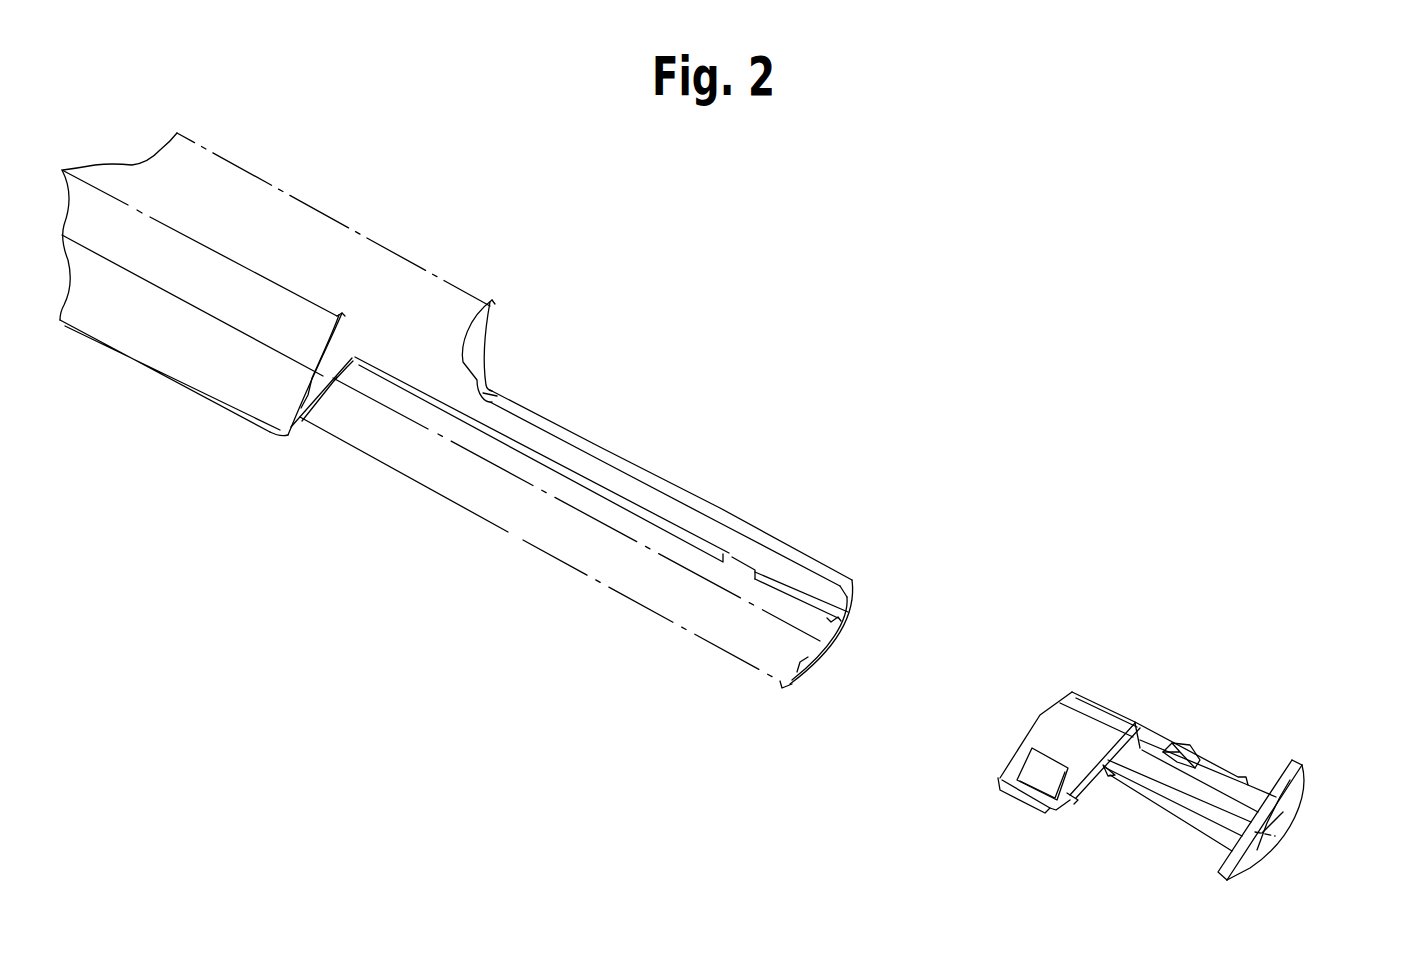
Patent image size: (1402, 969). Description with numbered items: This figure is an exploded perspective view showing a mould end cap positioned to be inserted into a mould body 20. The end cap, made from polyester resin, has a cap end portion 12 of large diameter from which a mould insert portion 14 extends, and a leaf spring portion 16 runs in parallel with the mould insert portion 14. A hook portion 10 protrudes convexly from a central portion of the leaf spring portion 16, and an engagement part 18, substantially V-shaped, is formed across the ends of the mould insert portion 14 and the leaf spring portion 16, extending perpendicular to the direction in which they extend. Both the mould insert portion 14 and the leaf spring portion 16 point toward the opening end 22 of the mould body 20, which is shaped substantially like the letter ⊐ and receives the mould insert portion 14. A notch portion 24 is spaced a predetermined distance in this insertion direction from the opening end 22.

The hook portion 10 is at (1174, 742).
The cap end portion 12 is at (1267, 827).
The mould insert portion 14 is at (1172, 807).
The leaf spring portion 16 is at (1212, 763).
The engagement part 18 is at (1057, 730).
The mould body 20 is at (493, 280).
The opening end 22 is at (847, 625).
The notch portion 24 is at (730, 550).